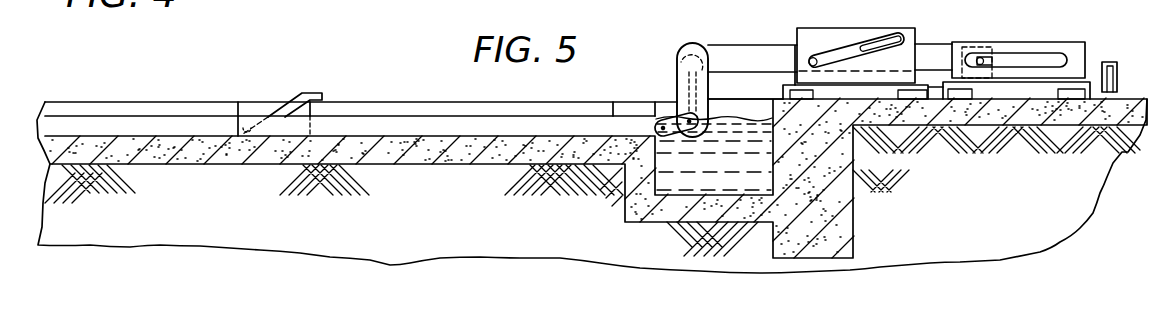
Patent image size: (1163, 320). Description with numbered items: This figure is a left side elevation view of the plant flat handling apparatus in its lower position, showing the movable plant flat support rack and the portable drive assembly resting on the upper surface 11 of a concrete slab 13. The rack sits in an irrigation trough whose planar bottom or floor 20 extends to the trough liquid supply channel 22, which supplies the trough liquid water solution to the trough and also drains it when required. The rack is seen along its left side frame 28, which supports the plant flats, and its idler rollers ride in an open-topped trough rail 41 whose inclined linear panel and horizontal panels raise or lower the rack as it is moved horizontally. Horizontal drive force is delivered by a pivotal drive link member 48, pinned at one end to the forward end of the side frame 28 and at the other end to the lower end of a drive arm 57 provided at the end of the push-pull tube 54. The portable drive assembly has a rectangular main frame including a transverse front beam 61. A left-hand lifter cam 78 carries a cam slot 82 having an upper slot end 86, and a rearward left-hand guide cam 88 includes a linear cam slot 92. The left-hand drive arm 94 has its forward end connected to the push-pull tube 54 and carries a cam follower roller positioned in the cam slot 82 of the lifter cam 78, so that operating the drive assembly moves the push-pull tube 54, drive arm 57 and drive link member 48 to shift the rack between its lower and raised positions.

The upper surface 11 is at (1122, 100).
The concrete slab 13 is at (1125, 113).
The planar bottom or floor 20 is at (123, 135).
The trough liquid supply channel 22 is at (719, 128).
The left side frame 28 is at (488, 125).
The open-topped trough rail 41 is at (310, 93).
The pivotal drive link member 48 is at (672, 116).
The push-pull tube 54 is at (687, 46).
The drive arm 57 is at (688, 82).
The transverse front beam 61 is at (1105, 50).
The left-hand lifter cam 78 is at (917, 32).
The cam slot 82 is at (842, 52).
The upper slot end 86 is at (883, 40).
The rearward left-hand guide cam 88 is at (1058, 43).
The linear cam slot 92 is at (1010, 58).
The left-hand drive arm 94 is at (773, 53).